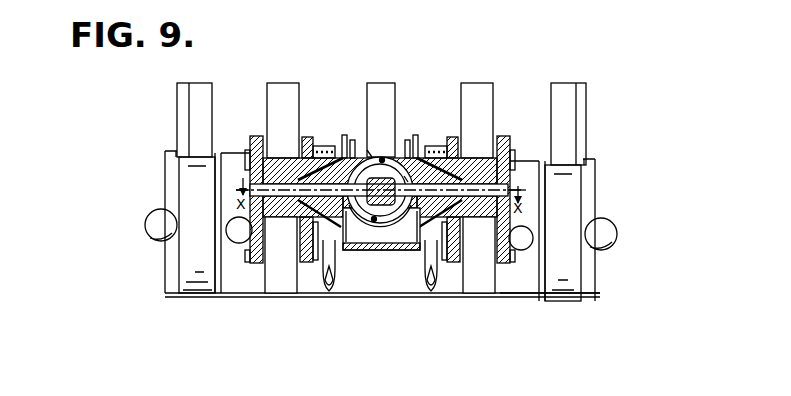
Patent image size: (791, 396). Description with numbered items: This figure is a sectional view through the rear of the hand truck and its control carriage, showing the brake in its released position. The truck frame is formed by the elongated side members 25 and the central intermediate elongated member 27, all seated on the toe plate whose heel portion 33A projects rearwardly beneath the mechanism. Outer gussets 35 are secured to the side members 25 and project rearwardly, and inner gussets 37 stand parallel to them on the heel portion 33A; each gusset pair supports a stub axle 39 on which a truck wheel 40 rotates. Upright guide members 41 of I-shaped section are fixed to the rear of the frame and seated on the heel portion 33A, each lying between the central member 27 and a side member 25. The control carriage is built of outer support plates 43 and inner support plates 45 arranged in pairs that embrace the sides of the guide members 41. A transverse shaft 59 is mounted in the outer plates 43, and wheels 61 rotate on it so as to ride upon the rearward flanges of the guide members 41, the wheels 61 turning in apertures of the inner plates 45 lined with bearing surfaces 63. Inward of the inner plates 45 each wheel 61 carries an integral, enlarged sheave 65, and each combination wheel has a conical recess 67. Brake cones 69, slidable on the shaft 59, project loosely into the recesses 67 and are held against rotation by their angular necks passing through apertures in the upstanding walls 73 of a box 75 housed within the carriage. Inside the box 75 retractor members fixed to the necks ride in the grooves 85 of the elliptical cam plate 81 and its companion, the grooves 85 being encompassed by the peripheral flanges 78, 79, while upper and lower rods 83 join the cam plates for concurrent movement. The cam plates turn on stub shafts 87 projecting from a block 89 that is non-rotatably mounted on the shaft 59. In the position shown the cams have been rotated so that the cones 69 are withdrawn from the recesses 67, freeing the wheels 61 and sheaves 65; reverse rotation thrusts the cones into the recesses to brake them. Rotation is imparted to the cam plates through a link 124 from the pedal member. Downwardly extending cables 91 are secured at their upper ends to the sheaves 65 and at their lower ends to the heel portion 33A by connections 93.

The side members 25 is at (193, 88).
The intermediate elongated member 27 is at (383, 95).
The heel portion 33A is at (516, 296).
The outer gussets 35 is at (175, 163).
The inner gussets 37 is at (218, 156).
The stub axle 39 is at (174, 234).
The truck wheel 40 is at (204, 209).
The upright guide members 41 is at (286, 88).
The outer support plates 43 is at (257, 136).
The inner support plates 45 is at (307, 137).
The shaft 59 is at (237, 228).
The wheels 61 is at (282, 167).
The bearing surfaces 63 is at (302, 158).
The sheave 65 is at (326, 148).
The conical recess 67 is at (420, 245).
The brake cones 69 is at (346, 224).
The upstanding wall 73 is at (353, 140).
The box 75 is at (351, 253).
The peripheral flange 78 is at (404, 178).
The peripheral flange 79 is at (365, 152).
The cam plate 81 is at (400, 172).
The rods 83 is at (397, 165).
The groove 85 is at (352, 165).
The stub shafts 87 is at (380, 190).
The block 89 is at (392, 228).
The cables 91 is at (325, 275).
The connections 93 is at (330, 289).
The link 124 is at (344, 135).